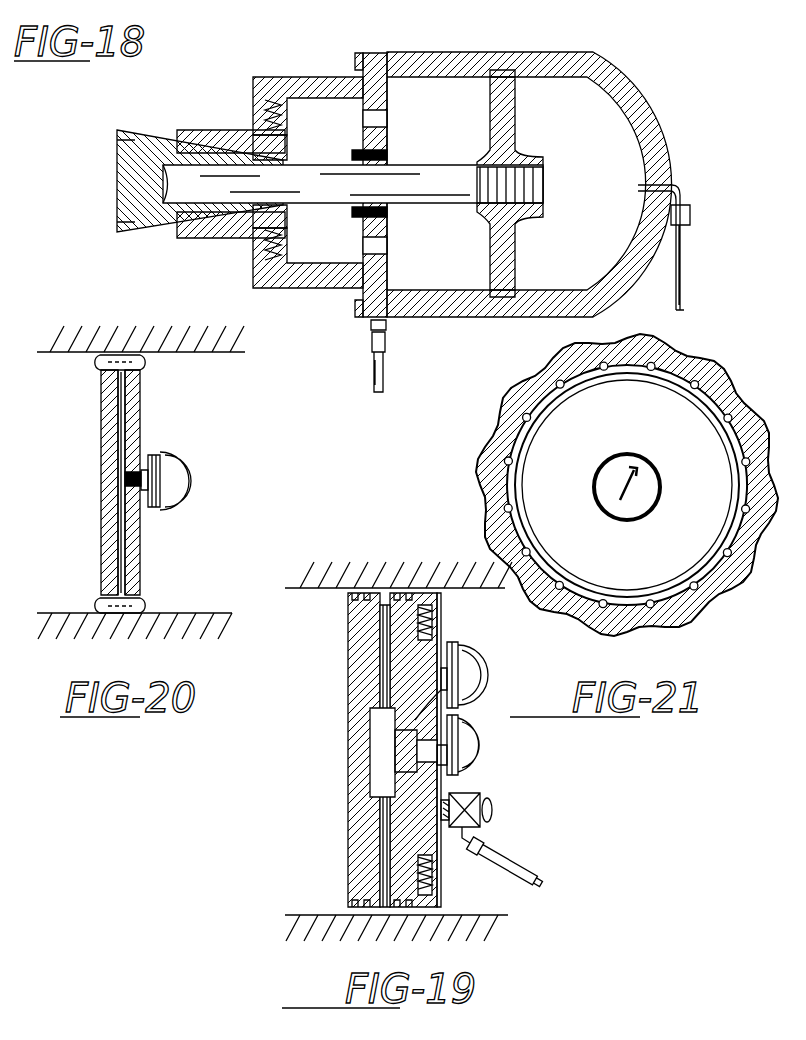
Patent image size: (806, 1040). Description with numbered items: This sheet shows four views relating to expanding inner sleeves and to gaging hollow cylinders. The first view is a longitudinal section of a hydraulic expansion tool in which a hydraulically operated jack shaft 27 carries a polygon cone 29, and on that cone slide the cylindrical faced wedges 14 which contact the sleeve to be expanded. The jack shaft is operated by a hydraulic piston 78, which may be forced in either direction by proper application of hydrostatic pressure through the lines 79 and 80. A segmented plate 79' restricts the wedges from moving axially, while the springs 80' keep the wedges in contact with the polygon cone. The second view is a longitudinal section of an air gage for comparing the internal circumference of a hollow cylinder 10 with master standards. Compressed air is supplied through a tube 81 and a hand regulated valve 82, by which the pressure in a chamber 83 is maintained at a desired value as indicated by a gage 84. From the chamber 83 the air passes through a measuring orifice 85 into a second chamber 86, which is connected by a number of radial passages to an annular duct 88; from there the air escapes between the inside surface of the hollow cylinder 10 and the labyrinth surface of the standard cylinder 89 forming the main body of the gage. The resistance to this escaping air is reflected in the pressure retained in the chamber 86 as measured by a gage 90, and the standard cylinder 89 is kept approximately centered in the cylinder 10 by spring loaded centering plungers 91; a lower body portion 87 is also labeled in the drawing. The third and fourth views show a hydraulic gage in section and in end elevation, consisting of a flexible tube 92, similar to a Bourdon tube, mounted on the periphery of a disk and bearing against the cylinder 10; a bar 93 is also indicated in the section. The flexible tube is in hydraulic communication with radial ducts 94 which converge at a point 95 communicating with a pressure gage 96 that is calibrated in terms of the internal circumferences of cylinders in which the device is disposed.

In FIG. 20, the hollow cylinder 10 is at (148, 345).
In FIG. 19, the hollow cylinder 10 is at (400, 580).
In FIG. 21, the hollow cylinder 10 is at (700, 364).
In FIG. 18, the cylindrical faced wedges 14 is at (222, 136).
In FIG. 18, the jack shaft 27 is at (318, 184).
In FIG. 18, the polygon cone 29 is at (163, 130).
In FIG. 18, the hydraulic piston 78 is at (495, 160).
In FIG. 18, the line 79 is at (400, 356).
In FIG. 18, the segmented plate 79' is at (307, 159).
In FIG. 18, the line 80 is at (658, 263).
In FIG. 18, the springs 80' is at (301, 180).
In FIG. 19, the tube 81 is at (490, 862).
In FIG. 19, the hand regulated valve 82 is at (494, 806).
In FIG. 19, the chamber 83 is at (376, 730).
In FIG. 19, the gage 84 is at (474, 748).
In FIG. 19, the measuring orifice 85 is at (390, 752).
In FIG. 19, the chamber 86 is at (383, 800).
In FIG. 19, the lower body portion 87 is at (352, 855).
In FIG. 19, the annular duct 88 is at (348, 622).
In FIG. 19, the standard cylinder 89 is at (350, 668).
In FIG. 19, the gage 90 is at (474, 670).
In FIG. 19, the spring loaded centering plungers 91 is at (440, 598).
In FIG. 20, the flexible tube 92 is at (140, 360).
In FIG. 21, the flexible tube 92 is at (728, 412).
In FIG. 20, the bar 93 is at (101, 428).
In FIG. 20, the radial ducts 94 is at (128, 388).
In FIG. 20, the point 95 is at (125, 476).
In FIG. 20, the pressure gage 96 is at (188, 487).
In FIG. 21, the pressure gage 96 is at (650, 493).